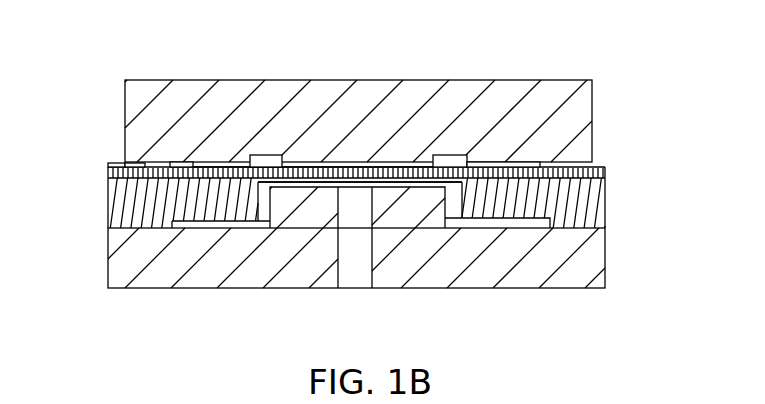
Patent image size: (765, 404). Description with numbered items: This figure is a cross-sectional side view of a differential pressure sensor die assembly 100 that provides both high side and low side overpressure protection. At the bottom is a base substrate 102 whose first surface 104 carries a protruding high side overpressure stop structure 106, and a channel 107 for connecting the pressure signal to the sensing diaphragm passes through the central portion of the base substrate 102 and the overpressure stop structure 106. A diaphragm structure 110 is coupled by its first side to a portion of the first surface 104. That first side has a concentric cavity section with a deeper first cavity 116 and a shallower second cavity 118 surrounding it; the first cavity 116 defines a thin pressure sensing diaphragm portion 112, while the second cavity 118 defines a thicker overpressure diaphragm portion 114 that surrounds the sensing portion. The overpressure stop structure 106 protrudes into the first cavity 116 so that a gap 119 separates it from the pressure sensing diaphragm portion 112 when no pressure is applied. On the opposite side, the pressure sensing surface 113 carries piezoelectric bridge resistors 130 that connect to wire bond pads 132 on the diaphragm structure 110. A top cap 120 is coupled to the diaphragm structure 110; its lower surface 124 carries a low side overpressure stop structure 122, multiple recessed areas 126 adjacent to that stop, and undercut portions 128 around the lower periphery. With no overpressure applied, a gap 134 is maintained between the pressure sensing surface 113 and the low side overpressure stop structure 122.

The differential pressure sensor die assembly 100 is at (95, 66).
The base substrate 102 is at (108, 266).
The first surface 104 is at (257, 226).
The high side overpressure stop structure 106 is at (451, 226).
The channel 107 is at (340, 262).
The diaphragm structure 110 is at (607, 188).
The pressure sensing diaphragm portion 112 is at (352, 172).
The pressure sensing surface 113 is at (433, 157).
The overpressure diaphragm portion 114 is at (177, 218).
The first cavity 116 is at (450, 200).
The second cavity 118 is at (172, 229).
The gap 119 is at (373, 188).
The top cap 120 is at (559, 81).
The low side overpressure stop structure 122 is at (420, 168).
The lower surface 124 is at (189, 166).
The recessed areas 126 is at (262, 155).
The undercut portions 128 is at (147, 165).
The piezoelectric bridge resistors 130 is at (245, 173).
The wire bond pads 132 is at (118, 164).
The gap 134 is at (313, 162).